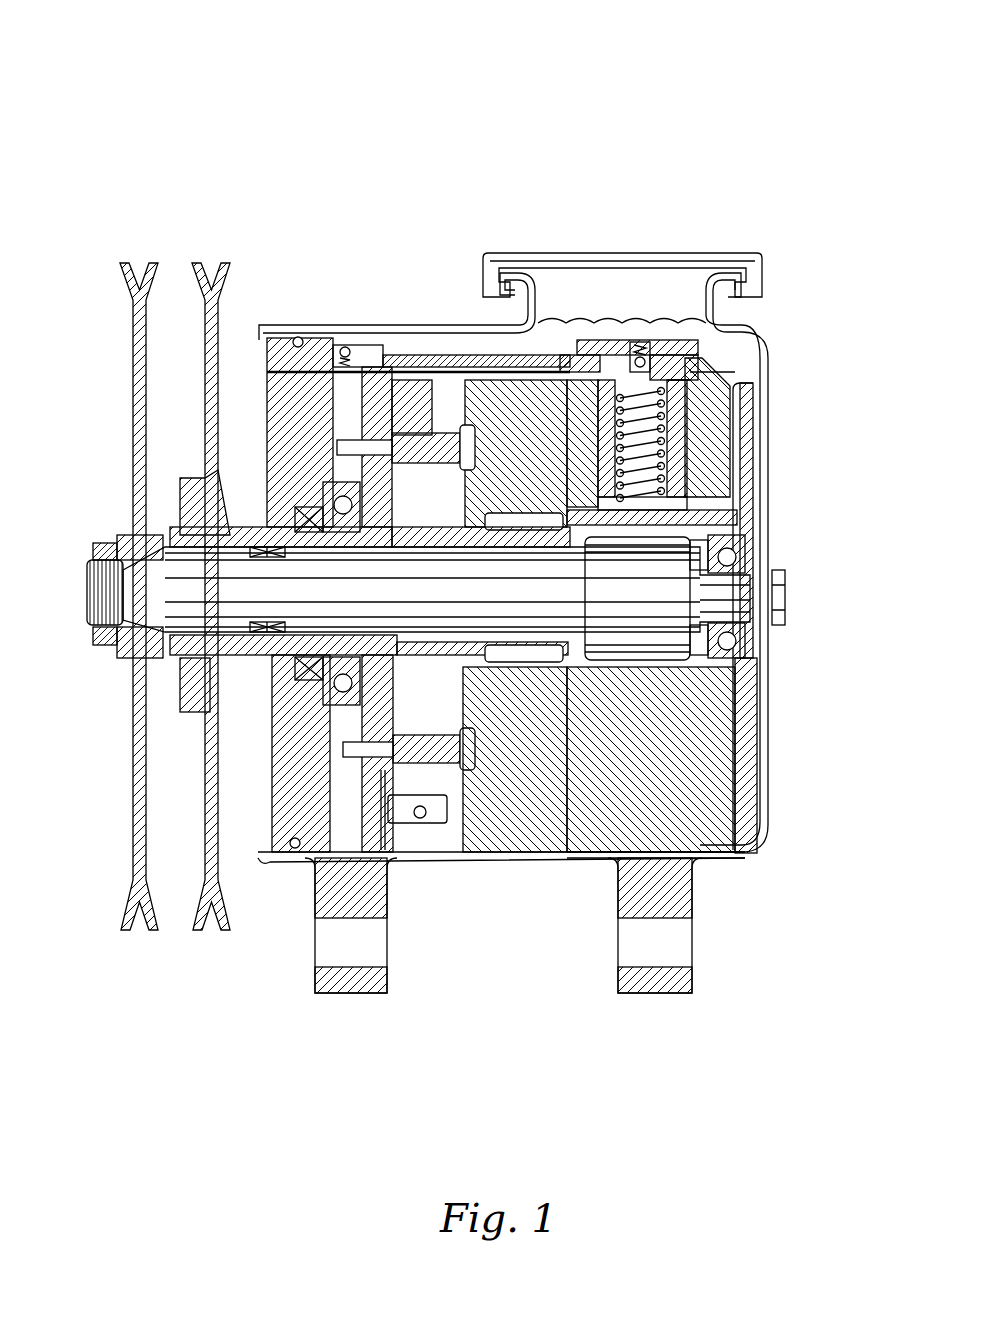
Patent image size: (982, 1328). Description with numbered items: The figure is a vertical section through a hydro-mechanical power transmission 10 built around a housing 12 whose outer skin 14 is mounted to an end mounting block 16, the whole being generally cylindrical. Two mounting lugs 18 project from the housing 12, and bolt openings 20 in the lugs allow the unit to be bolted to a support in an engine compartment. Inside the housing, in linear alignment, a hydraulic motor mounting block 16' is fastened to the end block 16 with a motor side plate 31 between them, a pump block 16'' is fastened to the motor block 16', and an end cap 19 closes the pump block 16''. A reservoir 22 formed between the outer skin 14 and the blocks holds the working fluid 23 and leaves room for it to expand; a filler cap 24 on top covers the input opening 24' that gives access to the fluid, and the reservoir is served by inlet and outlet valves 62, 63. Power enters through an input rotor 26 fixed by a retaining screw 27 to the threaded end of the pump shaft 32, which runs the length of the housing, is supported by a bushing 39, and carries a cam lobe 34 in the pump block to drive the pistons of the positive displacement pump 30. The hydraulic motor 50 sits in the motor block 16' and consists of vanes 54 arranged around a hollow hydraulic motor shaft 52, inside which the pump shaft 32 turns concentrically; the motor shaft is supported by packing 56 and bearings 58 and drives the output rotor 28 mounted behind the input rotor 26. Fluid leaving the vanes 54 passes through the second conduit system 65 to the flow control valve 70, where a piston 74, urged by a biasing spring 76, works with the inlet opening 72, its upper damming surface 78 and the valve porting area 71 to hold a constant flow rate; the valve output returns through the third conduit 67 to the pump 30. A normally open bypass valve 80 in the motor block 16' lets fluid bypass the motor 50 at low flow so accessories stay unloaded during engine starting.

The hydro-mechanical power transmission 10 is at (392, 160).
The housing 12 is at (310, 318).
The outer skin 14 is at (412, 352).
The end mounting block 16 is at (457, 523).
The hydraulic motor mounting block 16' is at (640, 796).
The pump block 16'' is at (677, 874).
The mounting lugs 18 is at (390, 870).
The end cap 19 is at (745, 698).
The bolt openings 20 is at (633, 937).
The reservoir 22 is at (748, 367).
The working fluid 23 is at (545, 300).
The filler cap 24 is at (622, 214).
The input opening 24' is at (622, 250).
The input rotor 26 is at (130, 292).
The retaining screw 27 is at (95, 650).
The output rotor 28 is at (198, 292).
The pump 30 is at (747, 543).
The motor side plate 31 is at (376, 345).
The pump shaft 32 is at (205, 570).
The cam lobe 34 is at (665, 595).
The bushing 39 is at (295, 665).
The hydraulic motor 50 is at (483, 708).
The hydraulic motor shaft 52 is at (210, 720).
The vanes 54 is at (448, 753).
The packing 56 is at (300, 510).
The bearings 58 is at (393, 810).
The reservoir inlet valve 62 is at (655, 372).
The reservoir outlet valve 63 is at (346, 342).
The second conduit system 65 is at (487, 375).
The third conduit 67 is at (742, 480).
The flow control valve 70 is at (682, 440).
The valve porting area 71 is at (693, 505).
The inlet opening 72 is at (690, 360).
The piston 74 is at (616, 388).
The biasing spring 76 is at (625, 395).
The upper damming surface 78 is at (675, 375).
The bypass valve 80 is at (368, 800).